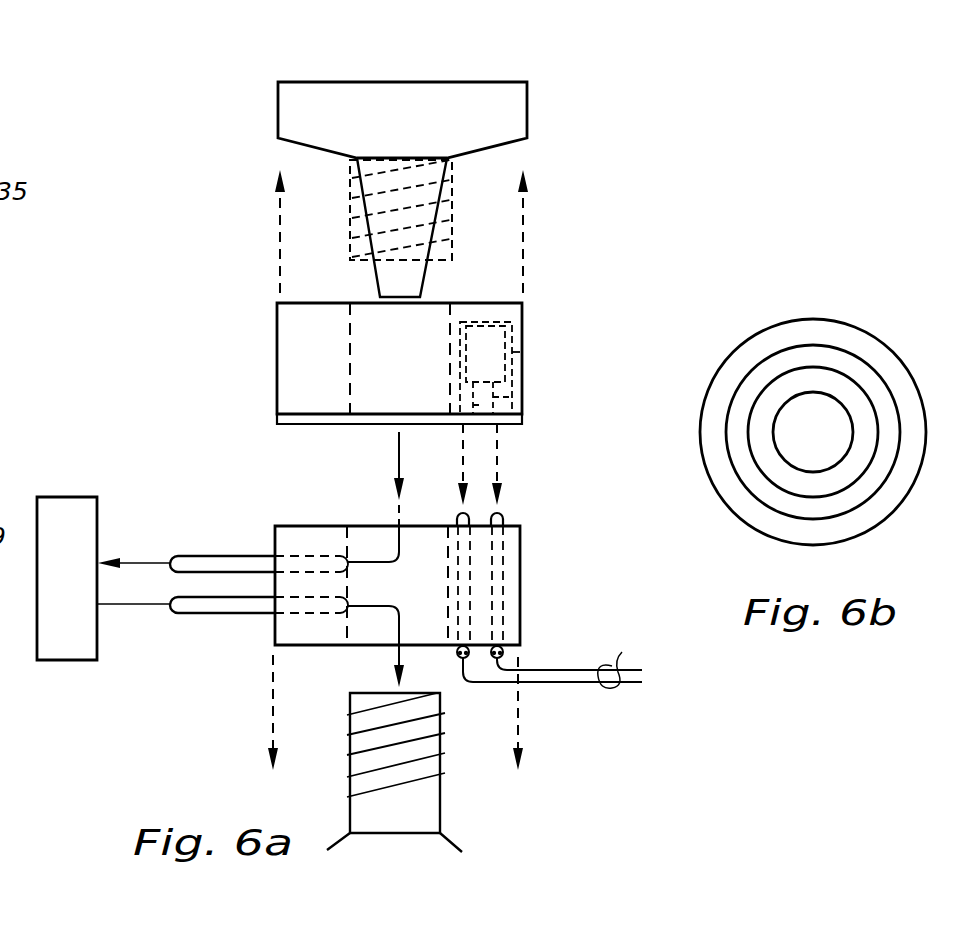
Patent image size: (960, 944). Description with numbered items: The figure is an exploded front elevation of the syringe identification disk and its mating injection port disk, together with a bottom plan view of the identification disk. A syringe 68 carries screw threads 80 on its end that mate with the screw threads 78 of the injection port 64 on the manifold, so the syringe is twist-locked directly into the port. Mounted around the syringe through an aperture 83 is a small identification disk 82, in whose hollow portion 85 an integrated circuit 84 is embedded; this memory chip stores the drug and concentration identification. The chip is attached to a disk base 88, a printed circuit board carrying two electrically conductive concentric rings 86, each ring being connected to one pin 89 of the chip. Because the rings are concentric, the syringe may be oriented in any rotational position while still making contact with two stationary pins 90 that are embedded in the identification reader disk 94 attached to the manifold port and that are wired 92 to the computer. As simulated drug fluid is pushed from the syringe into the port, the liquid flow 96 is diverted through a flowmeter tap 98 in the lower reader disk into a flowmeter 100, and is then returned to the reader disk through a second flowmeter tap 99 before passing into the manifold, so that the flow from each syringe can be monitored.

In FIG. 6A, the syringe 68 is at (432, 124).
In FIG. 6A, the screw threads on end of syringe 80 is at (453, 187).
In FIG. 6A, the aperture 83 is at (367, 300).
In FIG. 6A, the identification disk 82 is at (277, 312).
In FIG. 6A, the disk base 88 is at (300, 424).
In FIG. 6B, the disk base 88 is at (857, 323).
In FIG. 6A, the integrated circuit 84 is at (487, 352).
In FIG. 6A, the hollow portion 85 is at (527, 357).
In FIG. 6A, the pins of chip 89 is at (518, 393).
In FIG. 6A, the liquid flow 96 is at (400, 453).
In FIG. 6A, the stationary pins 90 is at (463, 518).
In FIG. 6A, the identification reader disk 94 is at (522, 560).
In FIG. 6A, the flowmeter tap 98 is at (240, 556).
In FIG. 6A, the flowmeter tap 99 is at (215, 613).
In FIG. 6A, the flowmeter 100 is at (92, 603).
In FIG. 6A, the wiring 92 is at (622, 652).
In FIG. 6A, the IV port 64 is at (440, 787).
In FIG. 6A, the screw threads on injection port 78 is at (445, 713).
In FIG. 6B, the concentric contact rings 86 is at (773, 348).